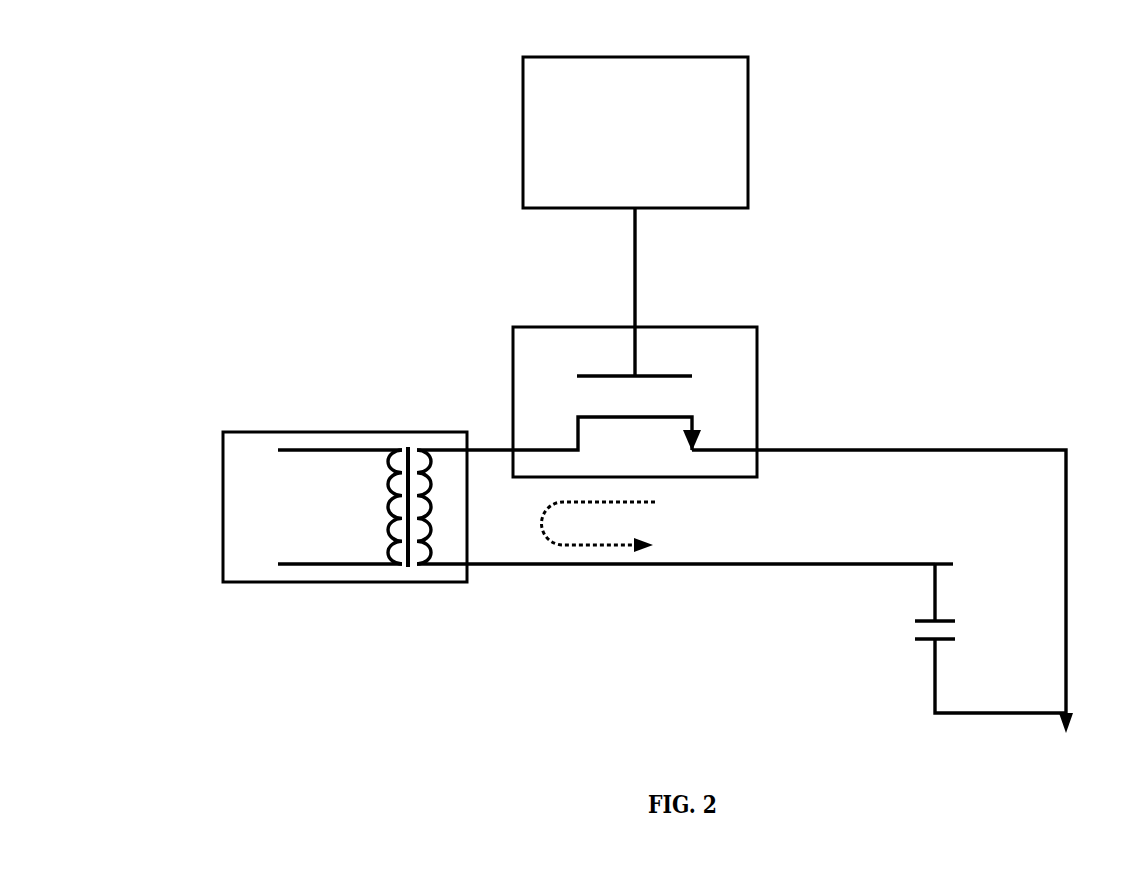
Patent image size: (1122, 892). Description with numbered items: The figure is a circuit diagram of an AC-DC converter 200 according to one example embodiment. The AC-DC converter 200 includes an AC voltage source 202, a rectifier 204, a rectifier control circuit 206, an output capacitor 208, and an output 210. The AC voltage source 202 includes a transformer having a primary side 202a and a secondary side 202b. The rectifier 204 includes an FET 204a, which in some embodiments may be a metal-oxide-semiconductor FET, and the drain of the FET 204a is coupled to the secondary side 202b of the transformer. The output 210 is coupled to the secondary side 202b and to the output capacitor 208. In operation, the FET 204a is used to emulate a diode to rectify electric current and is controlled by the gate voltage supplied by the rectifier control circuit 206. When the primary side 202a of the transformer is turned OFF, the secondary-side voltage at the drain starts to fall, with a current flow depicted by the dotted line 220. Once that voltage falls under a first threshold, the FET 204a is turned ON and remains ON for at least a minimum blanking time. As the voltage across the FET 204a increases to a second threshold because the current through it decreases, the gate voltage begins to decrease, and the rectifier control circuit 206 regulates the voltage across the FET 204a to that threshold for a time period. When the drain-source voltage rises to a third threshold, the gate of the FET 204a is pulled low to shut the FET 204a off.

The AC-DC converter 200 is at (1045, 82).
The AC voltage source 202 is at (223, 485).
The primary side 202a is at (388, 565).
The secondary side 202b is at (442, 565).
The rectifier 204 is at (757, 397).
The FET 204a is at (690, 376).
The rectifier control circuit 206 is at (748, 131).
The output capacitor 208 is at (915, 639).
The output 210 is at (953, 564).
The dotted line 220 is at (610, 547).